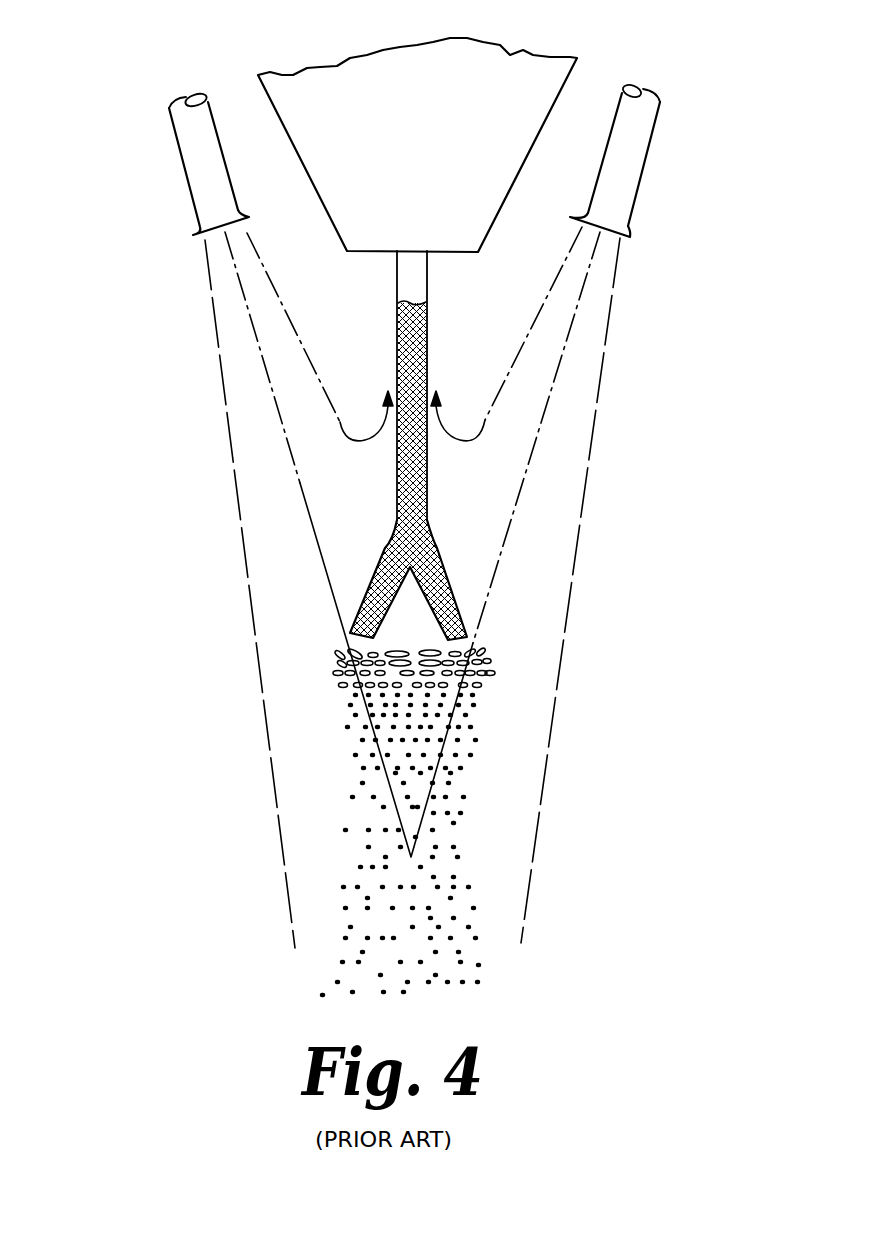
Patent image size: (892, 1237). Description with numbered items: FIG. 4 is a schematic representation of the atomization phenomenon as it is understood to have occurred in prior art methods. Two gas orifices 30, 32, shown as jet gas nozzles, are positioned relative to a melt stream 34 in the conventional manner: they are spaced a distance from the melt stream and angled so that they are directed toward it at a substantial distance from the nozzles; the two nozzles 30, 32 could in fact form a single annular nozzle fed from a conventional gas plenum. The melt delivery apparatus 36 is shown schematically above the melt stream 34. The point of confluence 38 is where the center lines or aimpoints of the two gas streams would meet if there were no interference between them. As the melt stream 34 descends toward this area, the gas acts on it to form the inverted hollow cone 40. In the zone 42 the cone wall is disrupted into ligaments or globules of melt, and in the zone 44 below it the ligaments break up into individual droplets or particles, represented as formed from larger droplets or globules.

The gas orifice 30 is at (634, 174).
The gas orifice 32 is at (195, 187).
The melt stream 34 is at (405, 338).
The melt delivery apparatus 36 is at (361, 93).
The point of confluence 38 is at (411, 857).
The inverted hollow cone 40 is at (346, 571).
The zone of ligament formation 42 is at (312, 664).
The atomized particles 44 is at (320, 741).